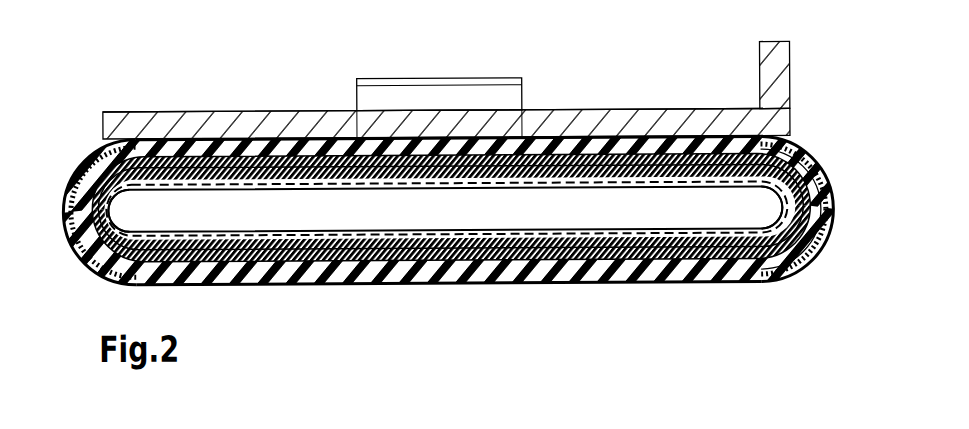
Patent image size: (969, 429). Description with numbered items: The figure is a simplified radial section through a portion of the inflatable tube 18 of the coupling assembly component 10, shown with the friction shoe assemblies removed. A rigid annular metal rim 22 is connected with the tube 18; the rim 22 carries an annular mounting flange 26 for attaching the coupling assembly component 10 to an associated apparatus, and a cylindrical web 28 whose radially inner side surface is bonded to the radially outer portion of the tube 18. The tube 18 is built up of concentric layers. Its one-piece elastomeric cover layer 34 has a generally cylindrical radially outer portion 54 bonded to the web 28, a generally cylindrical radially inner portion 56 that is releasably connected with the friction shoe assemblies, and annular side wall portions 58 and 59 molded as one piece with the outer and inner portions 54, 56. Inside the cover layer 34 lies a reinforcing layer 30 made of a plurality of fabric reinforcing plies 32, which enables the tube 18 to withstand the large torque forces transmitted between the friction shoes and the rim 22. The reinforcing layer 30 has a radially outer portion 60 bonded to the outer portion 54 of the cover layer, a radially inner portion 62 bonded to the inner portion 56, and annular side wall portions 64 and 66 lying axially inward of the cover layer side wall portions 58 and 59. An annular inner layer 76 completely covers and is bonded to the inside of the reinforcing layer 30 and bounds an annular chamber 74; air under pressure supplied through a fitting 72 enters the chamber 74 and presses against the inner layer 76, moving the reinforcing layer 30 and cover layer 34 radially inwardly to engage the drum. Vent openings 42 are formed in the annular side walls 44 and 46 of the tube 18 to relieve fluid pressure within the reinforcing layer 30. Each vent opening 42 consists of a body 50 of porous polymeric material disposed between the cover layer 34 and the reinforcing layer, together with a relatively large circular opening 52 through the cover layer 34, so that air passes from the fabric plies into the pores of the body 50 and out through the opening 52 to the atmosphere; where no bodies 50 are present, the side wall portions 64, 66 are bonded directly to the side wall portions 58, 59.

The coupling assembly component 10 is at (165, 81).
The inflatable tube 18 is at (471, 287).
The rigid annular metal rim 22 is at (634, 108).
The annular mounting flange 26 is at (775, 70).
The cylindrical web 28 is at (312, 124).
The reinforcing layer 30 is at (572, 247).
The reinforcing plies 32 is at (673, 255).
The cover layer 34 is at (311, 287).
The vent openings 42 is at (62, 197).
The annular side wall 44 is at (74, 263).
The annular side wall 46 is at (821, 259).
The bodies of porous polymeric material 50 is at (73, 170).
The openings in the cover layer 52 is at (70, 186).
The radially outer portion of the cover layer 54 is at (560, 148).
The radially inner portion of the cover layer 56 is at (387, 273).
The side wall portion of the cover layer 58 is at (92, 163).
The side wall portion of the cover layer 59 is at (826, 226).
The radially outer portion of the reinforcing layer 60 is at (372, 181).
The radially inner portion of the reinforcing layer 62 is at (455, 244).
The side wall portion of the reinforcing layer 64 is at (122, 218).
The side wall portion of the reinforcing layer 66 is at (775, 212).
The fitting 72 is at (490, 86).
The annular chamber 74 is at (527, 218).
The annular inner layer 76 is at (286, 191).